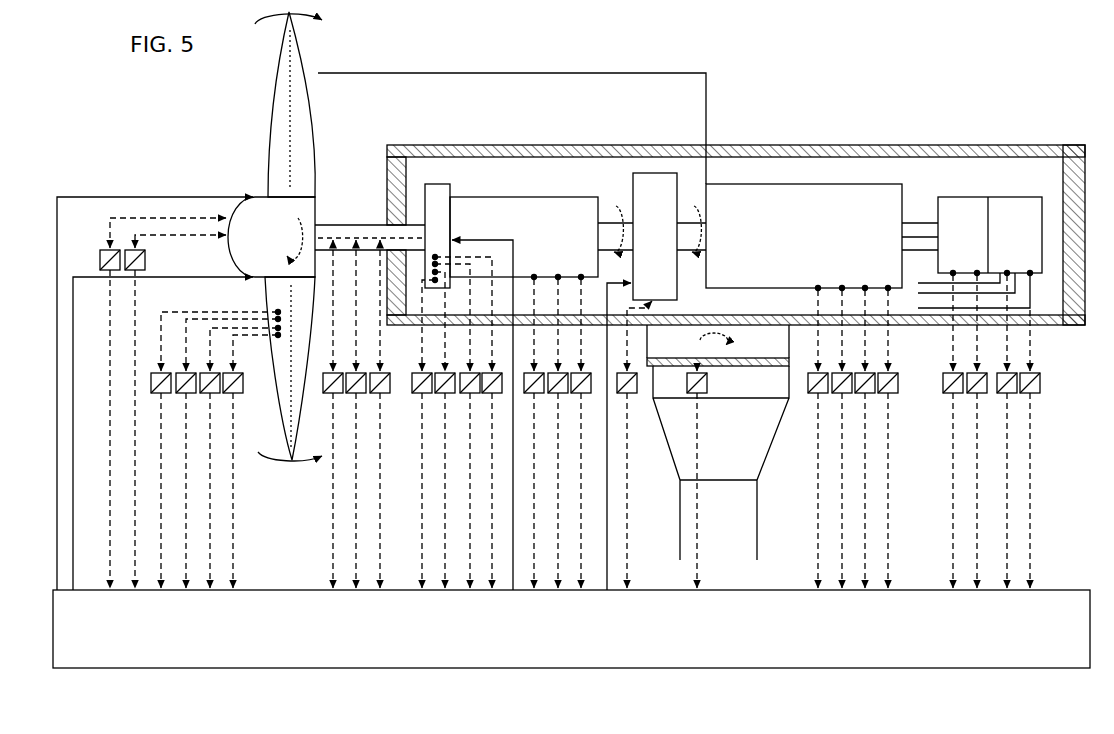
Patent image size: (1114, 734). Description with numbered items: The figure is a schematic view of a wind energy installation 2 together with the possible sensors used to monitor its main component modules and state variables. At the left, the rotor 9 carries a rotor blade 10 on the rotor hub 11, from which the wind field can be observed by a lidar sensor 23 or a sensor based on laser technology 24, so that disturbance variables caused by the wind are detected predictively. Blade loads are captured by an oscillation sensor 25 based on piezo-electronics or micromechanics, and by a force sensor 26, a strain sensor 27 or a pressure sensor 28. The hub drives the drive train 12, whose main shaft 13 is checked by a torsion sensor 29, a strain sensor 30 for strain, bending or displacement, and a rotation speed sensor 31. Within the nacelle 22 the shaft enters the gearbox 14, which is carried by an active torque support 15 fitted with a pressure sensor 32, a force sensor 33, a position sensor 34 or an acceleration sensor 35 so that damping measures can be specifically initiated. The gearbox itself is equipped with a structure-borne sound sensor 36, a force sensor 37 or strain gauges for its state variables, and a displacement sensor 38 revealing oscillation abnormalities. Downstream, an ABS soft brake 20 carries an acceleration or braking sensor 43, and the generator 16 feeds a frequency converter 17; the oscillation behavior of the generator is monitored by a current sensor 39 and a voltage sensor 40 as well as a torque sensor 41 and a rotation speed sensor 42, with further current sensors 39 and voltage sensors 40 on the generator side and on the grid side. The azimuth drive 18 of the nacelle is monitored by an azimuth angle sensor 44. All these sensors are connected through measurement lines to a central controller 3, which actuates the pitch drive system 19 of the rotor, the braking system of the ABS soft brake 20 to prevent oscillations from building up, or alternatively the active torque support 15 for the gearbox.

The wind energy installation 2 is at (742, 122).
The controller 3 is at (1058, 588).
The rotor 9 is at (266, 130).
The rotor blade 10 is at (318, 134).
The rotor hub 11 is at (318, 210).
The drive train 12 is at (487, 73).
The main shaft 13 is at (362, 224).
The gearbox 14 is at (545, 212).
The torque support 15 is at (440, 198).
The generator 16 is at (818, 218).
The frequency converter 17 is at (950, 215).
The azimuth drive 18 is at (738, 367).
The pitch drive system 19 is at (252, 192).
The ABS soft brake 20 is at (650, 188).
The nacelle 22 is at (1052, 146).
The lidar sensor 23 is at (99, 260).
The sensor based on laser technology 24 is at (147, 262).
The oscillation sensor 25 is at (160, 396).
The force sensor 26 is at (185, 396).
The strain sensor 27 is at (209, 396).
The pressure sensor 28 is at (232, 396).
The torsion sensor 29 is at (330, 396).
The strain sensor 30 is at (354, 396).
The rotation speed sensor 31 is at (378, 396).
The pressure sensor 32 is at (420, 396).
The force sensor 33 is at (444, 396).
The position sensor 34 is at (468, 396).
The acceleration sensor 35 is at (490, 396).
The structure-borne sound sensor 36 is at (532, 396).
The force sensor 37 is at (556, 396).
The displacement sensor 38 is at (579, 396).
The current sensor 39 is at (816, 396).
The voltage sensor 40 is at (840, 396).
The torque sensor 41 is at (864, 396).
The rotation speed sensor 42 is at (887, 396).
The acceleration or braking sensor 43 is at (628, 396).
The azimuth angle sensor 44 is at (694, 396).